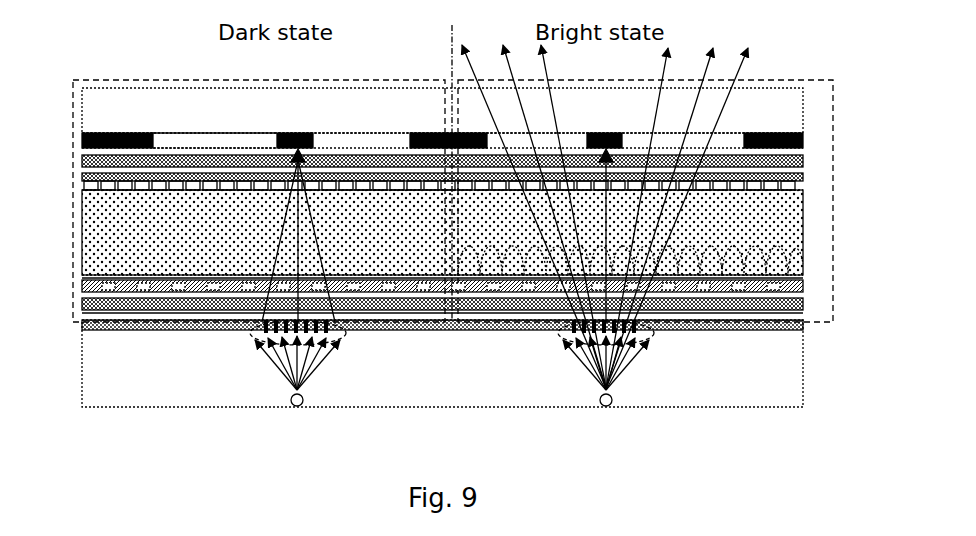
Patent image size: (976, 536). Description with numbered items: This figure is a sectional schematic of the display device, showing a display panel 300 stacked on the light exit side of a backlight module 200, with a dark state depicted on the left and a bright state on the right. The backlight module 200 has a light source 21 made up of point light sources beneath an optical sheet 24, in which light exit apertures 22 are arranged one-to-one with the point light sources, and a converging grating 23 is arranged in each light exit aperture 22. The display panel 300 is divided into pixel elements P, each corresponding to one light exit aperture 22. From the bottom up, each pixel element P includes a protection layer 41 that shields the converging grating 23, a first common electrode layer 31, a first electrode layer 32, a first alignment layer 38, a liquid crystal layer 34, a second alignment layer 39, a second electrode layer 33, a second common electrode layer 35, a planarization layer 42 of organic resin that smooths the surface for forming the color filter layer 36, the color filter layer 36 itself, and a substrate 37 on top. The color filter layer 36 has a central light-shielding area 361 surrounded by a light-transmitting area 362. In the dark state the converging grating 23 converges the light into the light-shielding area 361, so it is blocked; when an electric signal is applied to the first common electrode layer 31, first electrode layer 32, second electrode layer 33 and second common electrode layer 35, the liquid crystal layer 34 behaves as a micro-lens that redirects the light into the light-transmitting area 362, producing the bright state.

The pixel element P is at (135, 80).
The substrate 37 is at (806, 104).
The color filter layer 36 is at (477, 93).
The light-shielding area 361 is at (312, 138).
The light-transmitting area 362 is at (205, 140).
The planarization layer 42 is at (82, 152).
The second common electrode layer 35 is at (806, 160).
The second electrode layer 33 is at (806, 177).
The second alignment layer 39 is at (82, 186).
The liquid crystal layer 34 is at (806, 235).
The first alignment layer 38 is at (82, 278).
The first electrode layer 32 is at (792, 290).
The first common electrode layer 31 is at (806, 305).
The protection layer 41 is at (82, 314).
The optical sheet 24 is at (82, 326).
The backlight module 200 is at (808, 405).
The display panel 300 is at (73, 100).
The light source 21 is at (303, 405).
The light exit aperture 22 is at (350, 335).
The converging grating 23 is at (648, 330).